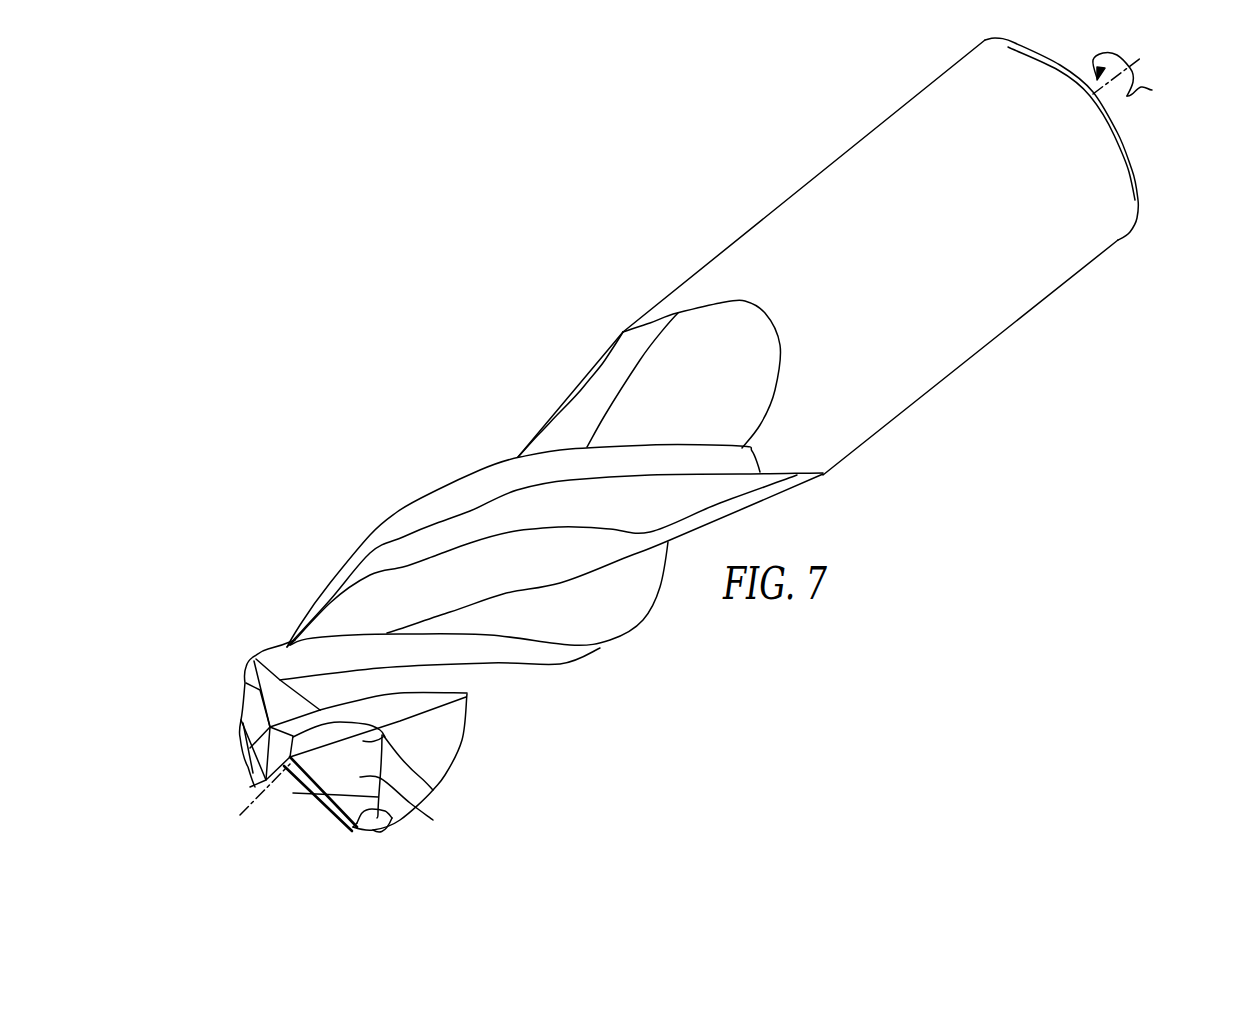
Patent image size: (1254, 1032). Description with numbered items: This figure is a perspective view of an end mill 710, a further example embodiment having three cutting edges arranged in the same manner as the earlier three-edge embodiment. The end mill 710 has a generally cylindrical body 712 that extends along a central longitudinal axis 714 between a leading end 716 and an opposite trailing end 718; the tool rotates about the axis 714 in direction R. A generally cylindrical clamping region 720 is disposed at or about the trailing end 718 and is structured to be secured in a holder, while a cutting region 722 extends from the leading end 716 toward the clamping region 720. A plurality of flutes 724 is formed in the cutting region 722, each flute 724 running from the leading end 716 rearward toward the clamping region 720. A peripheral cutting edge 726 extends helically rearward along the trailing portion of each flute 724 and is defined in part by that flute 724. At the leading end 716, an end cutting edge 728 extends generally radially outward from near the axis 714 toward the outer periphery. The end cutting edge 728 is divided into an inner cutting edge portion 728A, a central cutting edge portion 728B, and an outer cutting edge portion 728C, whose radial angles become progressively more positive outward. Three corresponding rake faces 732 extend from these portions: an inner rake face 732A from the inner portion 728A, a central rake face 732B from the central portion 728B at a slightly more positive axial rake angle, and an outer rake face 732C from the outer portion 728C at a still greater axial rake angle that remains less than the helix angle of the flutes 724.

The end mill 710 is at (655, 223).
The body 712 is at (945, 360).
The central longitudinal axis 714 is at (247, 803).
The leading end 716 is at (223, 815).
The trailing end 718 is at (1167, 172).
The clamping region 720 is at (782, 183).
The cutting region 722 is at (576, 765).
The flutes 724 is at (510, 440).
The peripheral cutting edge 726 is at (488, 468).
The end cutting edge 728 is at (277, 799).
The inner cutting edge portion 728A is at (284, 773).
The central cutting edge portion 728B is at (307, 793).
The outer cutting edge portion 728C is at (350, 818).
The rake faces 732 is at (505, 782).
The inner rake face 732A is at (433, 790).
The central rake face 732B is at (433, 820).
The outer rake face 732C is at (382, 835).